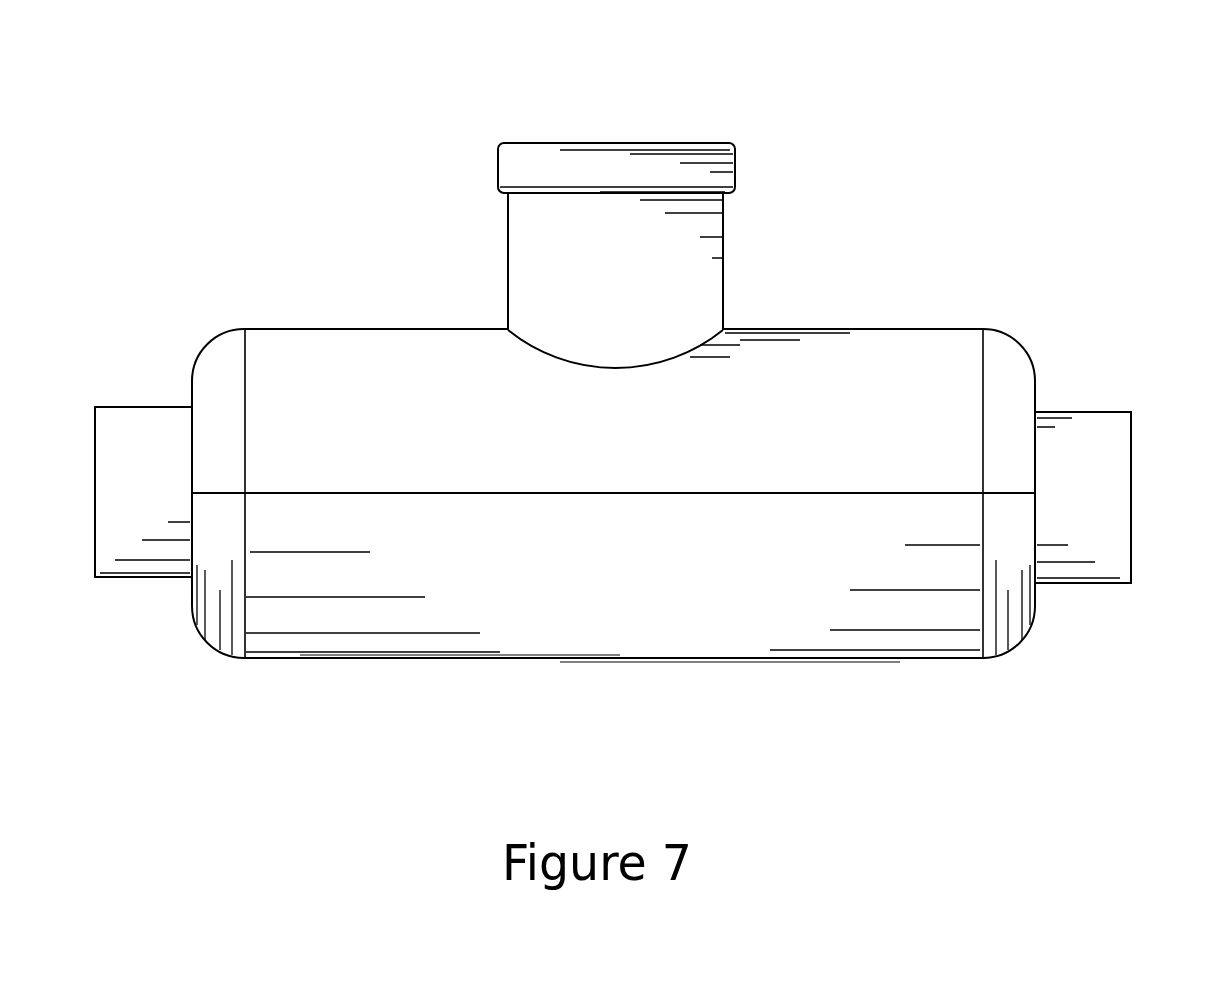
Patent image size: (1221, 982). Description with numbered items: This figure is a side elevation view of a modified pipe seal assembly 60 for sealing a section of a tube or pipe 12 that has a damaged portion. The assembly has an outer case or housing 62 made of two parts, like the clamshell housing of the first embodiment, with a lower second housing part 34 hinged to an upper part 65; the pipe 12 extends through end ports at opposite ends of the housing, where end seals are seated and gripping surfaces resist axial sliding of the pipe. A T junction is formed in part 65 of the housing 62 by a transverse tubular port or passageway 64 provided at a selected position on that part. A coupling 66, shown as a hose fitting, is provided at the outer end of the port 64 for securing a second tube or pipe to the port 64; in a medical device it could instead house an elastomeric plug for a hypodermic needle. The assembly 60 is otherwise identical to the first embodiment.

The coupling 66 is at (590, 168).
The transverse tubular port 64 is at (655, 275).
The modified pipe seal assembly 60 is at (610, 432).
The housing part 65 is at (845, 367).
The pipe 12 is at (1073, 440).
The second housing part 34 is at (360, 597).
The outer housing 62 is at (992, 711).